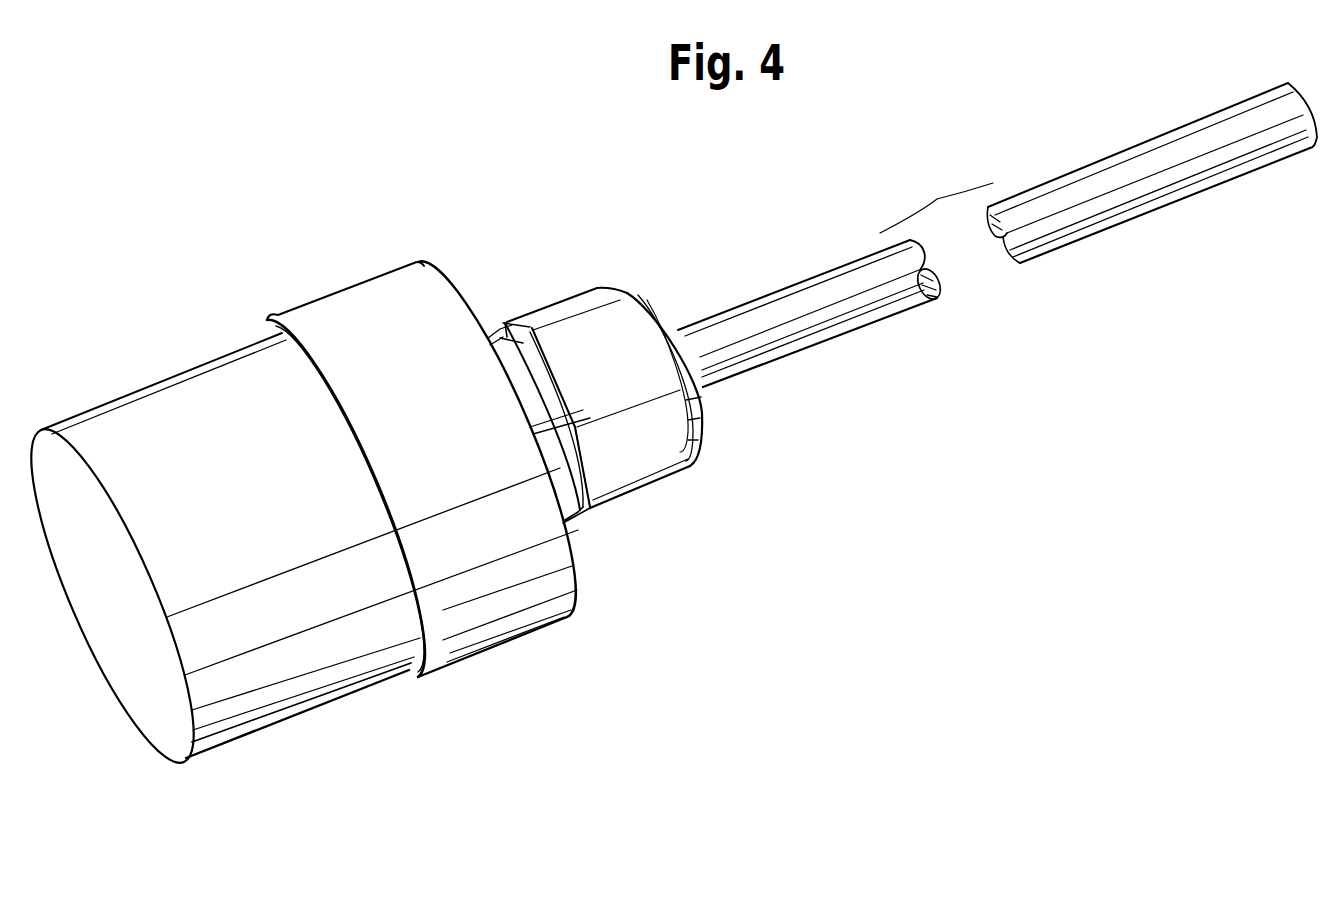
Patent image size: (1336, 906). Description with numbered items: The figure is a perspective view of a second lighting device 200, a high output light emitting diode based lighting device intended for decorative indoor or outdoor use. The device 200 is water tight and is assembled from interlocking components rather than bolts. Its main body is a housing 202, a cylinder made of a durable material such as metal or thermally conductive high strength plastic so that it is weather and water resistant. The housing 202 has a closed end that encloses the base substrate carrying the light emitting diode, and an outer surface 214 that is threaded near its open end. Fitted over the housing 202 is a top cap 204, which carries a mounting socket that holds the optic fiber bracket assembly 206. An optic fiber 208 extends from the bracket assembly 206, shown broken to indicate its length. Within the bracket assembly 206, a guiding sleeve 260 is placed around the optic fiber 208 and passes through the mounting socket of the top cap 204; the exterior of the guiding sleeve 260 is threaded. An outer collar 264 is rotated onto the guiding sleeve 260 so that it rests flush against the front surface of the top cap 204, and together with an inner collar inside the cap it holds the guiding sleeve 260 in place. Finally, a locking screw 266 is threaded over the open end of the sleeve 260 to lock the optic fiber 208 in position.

The lighting device 200 is at (478, 203).
The housing 202 is at (180, 393).
The top cap 204 is at (330, 318).
The optic fiber bracket assembly 206 is at (578, 297).
The optic fiber 208 is at (812, 293).
The outer surface 214 is at (305, 675).
The guiding sleeve 260 is at (522, 355).
The outer collar 264 is at (577, 517).
The locking screw 266 is at (636, 467).